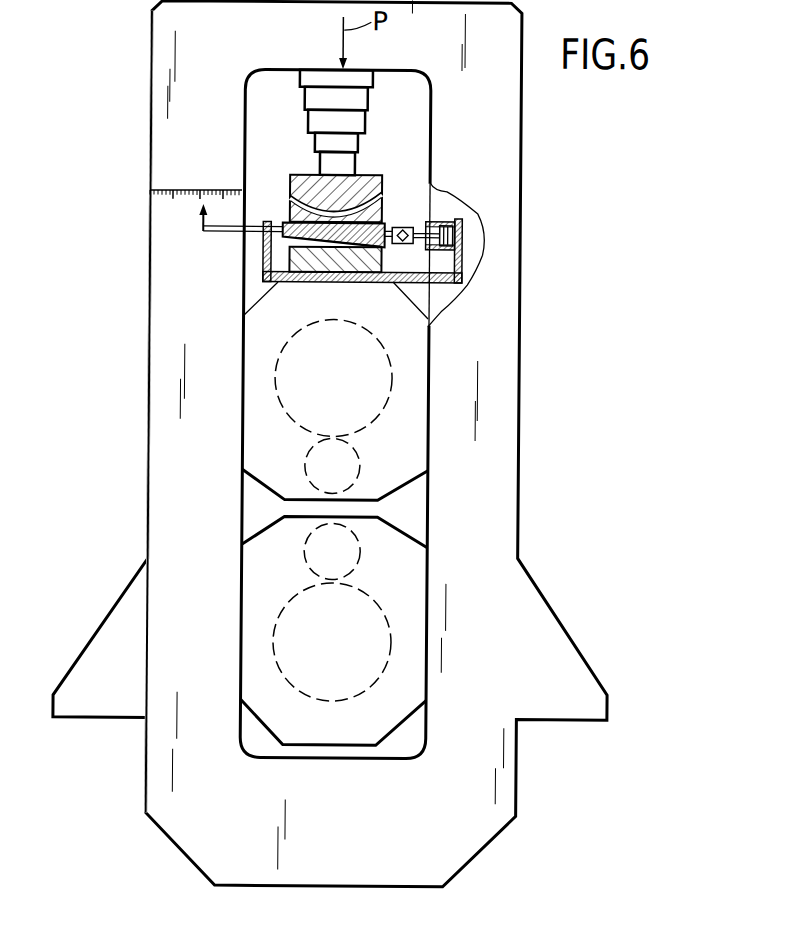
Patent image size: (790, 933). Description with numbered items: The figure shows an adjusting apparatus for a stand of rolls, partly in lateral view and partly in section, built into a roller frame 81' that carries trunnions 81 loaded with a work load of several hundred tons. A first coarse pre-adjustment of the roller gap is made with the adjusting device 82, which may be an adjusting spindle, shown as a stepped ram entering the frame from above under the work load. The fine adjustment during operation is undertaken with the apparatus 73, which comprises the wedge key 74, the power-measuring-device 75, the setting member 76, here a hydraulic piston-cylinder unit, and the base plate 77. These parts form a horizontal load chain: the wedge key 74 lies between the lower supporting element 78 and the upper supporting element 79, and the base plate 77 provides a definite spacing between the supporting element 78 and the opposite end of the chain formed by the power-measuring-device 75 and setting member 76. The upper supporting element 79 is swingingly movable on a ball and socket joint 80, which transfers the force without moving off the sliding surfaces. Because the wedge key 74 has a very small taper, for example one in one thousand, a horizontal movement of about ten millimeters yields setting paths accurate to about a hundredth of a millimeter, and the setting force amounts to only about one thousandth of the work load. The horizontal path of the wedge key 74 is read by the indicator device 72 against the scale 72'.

The indicator device 72 is at (225, 238).
The scale 72' is at (196, 162).
The apparatus 73 is at (256, 264).
The wedge key 74 is at (286, 227).
The power-measuring-device 75 is at (398, 227).
The setting member 76 is at (434, 220).
The base plate 77 is at (461, 255).
The supporting element 78 is at (311, 258).
The upper supporting element 79 is at (303, 180).
The ball and socket joint 80 is at (356, 200).
The trunnions 81 is at (298, 509).
The roller frame 81' is at (332, 444).
The adjusting device 82 is at (358, 98).